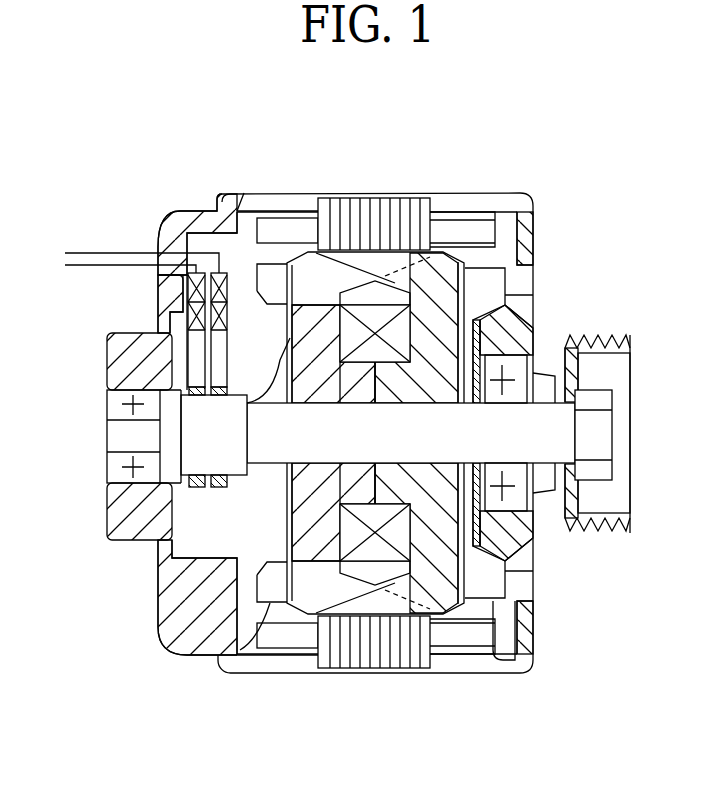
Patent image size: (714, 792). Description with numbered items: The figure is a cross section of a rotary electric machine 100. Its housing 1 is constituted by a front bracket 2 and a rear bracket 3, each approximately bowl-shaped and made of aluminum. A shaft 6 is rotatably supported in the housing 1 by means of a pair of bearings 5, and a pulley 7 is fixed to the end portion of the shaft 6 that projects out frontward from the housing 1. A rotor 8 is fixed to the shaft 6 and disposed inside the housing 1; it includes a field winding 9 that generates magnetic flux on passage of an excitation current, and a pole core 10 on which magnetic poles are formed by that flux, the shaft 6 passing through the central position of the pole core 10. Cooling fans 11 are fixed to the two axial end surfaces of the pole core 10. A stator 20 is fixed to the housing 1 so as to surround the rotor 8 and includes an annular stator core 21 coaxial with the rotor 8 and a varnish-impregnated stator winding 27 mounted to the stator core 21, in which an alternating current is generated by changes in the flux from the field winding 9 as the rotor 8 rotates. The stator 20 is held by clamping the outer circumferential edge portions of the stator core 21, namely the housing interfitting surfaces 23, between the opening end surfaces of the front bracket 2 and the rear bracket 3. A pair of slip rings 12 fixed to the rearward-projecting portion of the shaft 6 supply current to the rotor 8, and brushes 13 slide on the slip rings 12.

The rotary electric machine 100 is at (123, 144).
The housing 1 is at (537, 226).
The front bracket 2 is at (523, 193).
The rear bracket 3 is at (212, 227).
The bearings 5 is at (118, 462).
The shaft 6 is at (562, 432).
The pulley 7 is at (627, 335).
The rotor 8 is at (360, 505).
The field winding 9 is at (367, 555).
The pole core 10 is at (397, 587).
The cooling fans 11 is at (240, 650).
The slip rings 12 is at (213, 398).
The brush 13 is at (183, 369).
The stator 20 is at (378, 147).
The stator core 21 is at (358, 205).
The housing interfitting surfaces 23 is at (432, 208).
The stator winding 27 is at (303, 225).